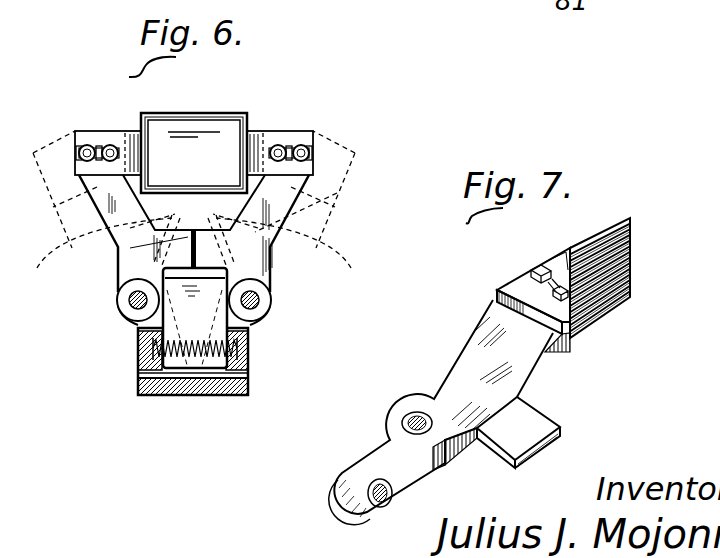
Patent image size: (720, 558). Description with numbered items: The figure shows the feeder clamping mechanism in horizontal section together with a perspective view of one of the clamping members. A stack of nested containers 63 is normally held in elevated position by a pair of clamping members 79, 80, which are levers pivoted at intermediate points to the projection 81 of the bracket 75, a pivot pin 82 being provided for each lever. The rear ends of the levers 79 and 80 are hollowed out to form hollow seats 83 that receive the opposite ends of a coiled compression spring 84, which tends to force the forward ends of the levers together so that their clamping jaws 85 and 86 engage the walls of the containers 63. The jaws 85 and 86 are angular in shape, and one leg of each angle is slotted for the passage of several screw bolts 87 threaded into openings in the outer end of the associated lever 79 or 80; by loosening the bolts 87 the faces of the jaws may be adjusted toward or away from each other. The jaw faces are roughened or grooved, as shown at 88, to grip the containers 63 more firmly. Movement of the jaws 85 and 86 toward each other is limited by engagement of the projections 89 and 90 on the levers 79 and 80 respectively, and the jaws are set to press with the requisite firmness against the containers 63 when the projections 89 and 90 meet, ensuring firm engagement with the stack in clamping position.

In FIG. 6, the containers 63 is at (207, 117).
In FIG. 6, the bracket 75 is at (187, 297).
In FIG. 6, the clamping member 79 is at (46, 250).
In FIG. 7, the clamping member 79 is at (462, 365).
In FIG. 6, the clamping member 80 is at (283, 242).
In FIG. 6, the projection 81 is at (150, 396).
In FIG. 6, the pivot pin 82 is at (133, 307).
In FIG. 6, the hollow seat 83 is at (250, 357).
In FIG. 7, the hollow seat 83 is at (390, 494).
In FIG. 6, the coiled compression spring 84 is at (202, 337).
In FIG. 6, the clamping jaw 85 is at (137, 130).
In FIG. 7, the clamping jaw 85 is at (615, 222).
In FIG. 6, the clamping jaw 86 is at (306, 109).
In FIG. 6, the screw bolts 87 is at (87, 146).
In FIG. 7, the screw bolts 87 is at (565, 290).
In FIG. 7, the roughened or grooved face 88 is at (633, 277).
In FIG. 6, the projection 89 is at (188, 237).
In FIG. 7, the projection 89 is at (550, 417).
In FIG. 6, the projection 90 is at (197, 237).